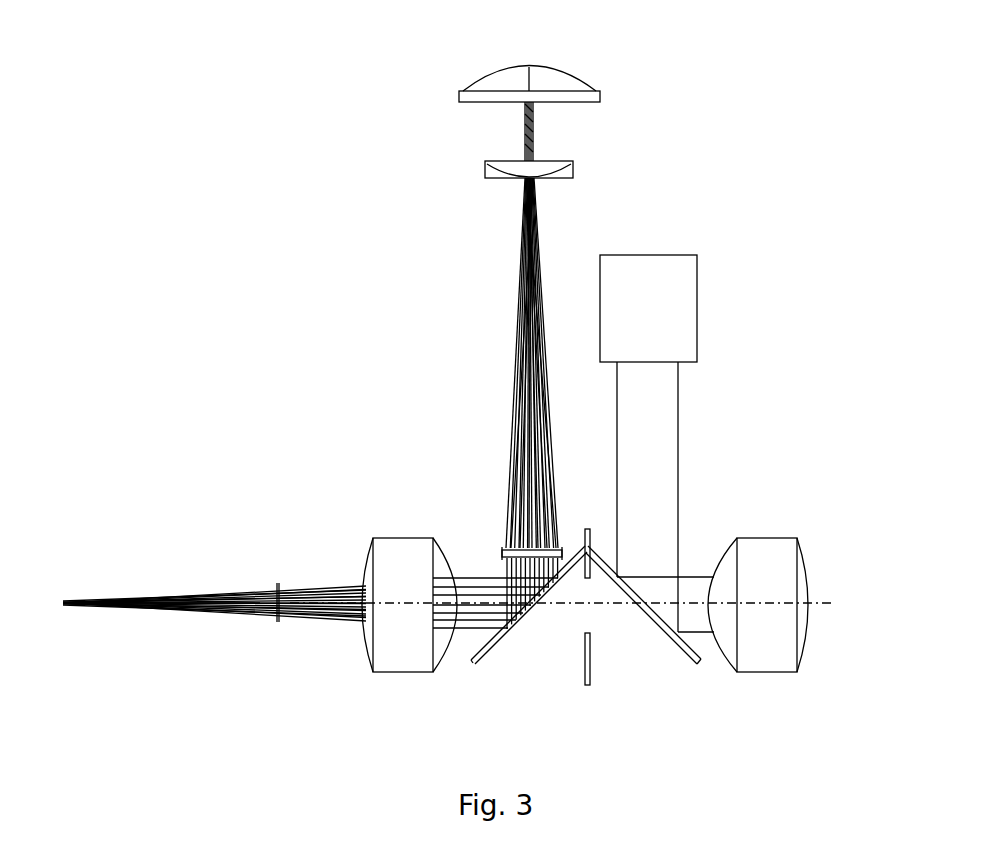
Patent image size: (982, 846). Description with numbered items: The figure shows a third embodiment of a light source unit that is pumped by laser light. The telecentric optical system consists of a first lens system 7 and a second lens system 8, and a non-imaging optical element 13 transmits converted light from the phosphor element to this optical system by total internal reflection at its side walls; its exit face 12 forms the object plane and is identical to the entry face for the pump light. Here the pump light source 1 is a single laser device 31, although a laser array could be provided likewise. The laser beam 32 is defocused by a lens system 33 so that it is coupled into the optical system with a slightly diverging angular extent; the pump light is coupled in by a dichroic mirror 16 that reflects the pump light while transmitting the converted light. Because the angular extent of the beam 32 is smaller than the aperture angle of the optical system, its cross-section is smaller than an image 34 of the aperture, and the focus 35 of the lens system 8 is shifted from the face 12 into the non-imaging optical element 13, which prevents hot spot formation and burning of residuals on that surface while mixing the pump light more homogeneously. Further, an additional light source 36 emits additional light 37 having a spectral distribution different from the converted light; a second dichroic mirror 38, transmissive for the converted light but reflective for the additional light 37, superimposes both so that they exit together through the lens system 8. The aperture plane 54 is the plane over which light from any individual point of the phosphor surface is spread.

The pump light source 1 is at (577, 58).
The first lens system 7 is at (402, 538).
The second lens system 8 is at (768, 538).
The exit face 12 is at (279, 584).
The non-imaging optical element 13 is at (213, 597).
The dichroic mirror 16 is at (572, 566).
The laser device 31 is at (525, 62).
The laser beam 32 is at (534, 137).
The lens system 33 is at (486, 172).
The image of the aperture 34 is at (502, 553).
The focus 35 is at (210, 607).
The additional light source 36 is at (682, 310).
The additional light 37 is at (655, 410).
The second dichroic mirror 38 is at (650, 621).
The aperture plane 54 is at (585, 668).